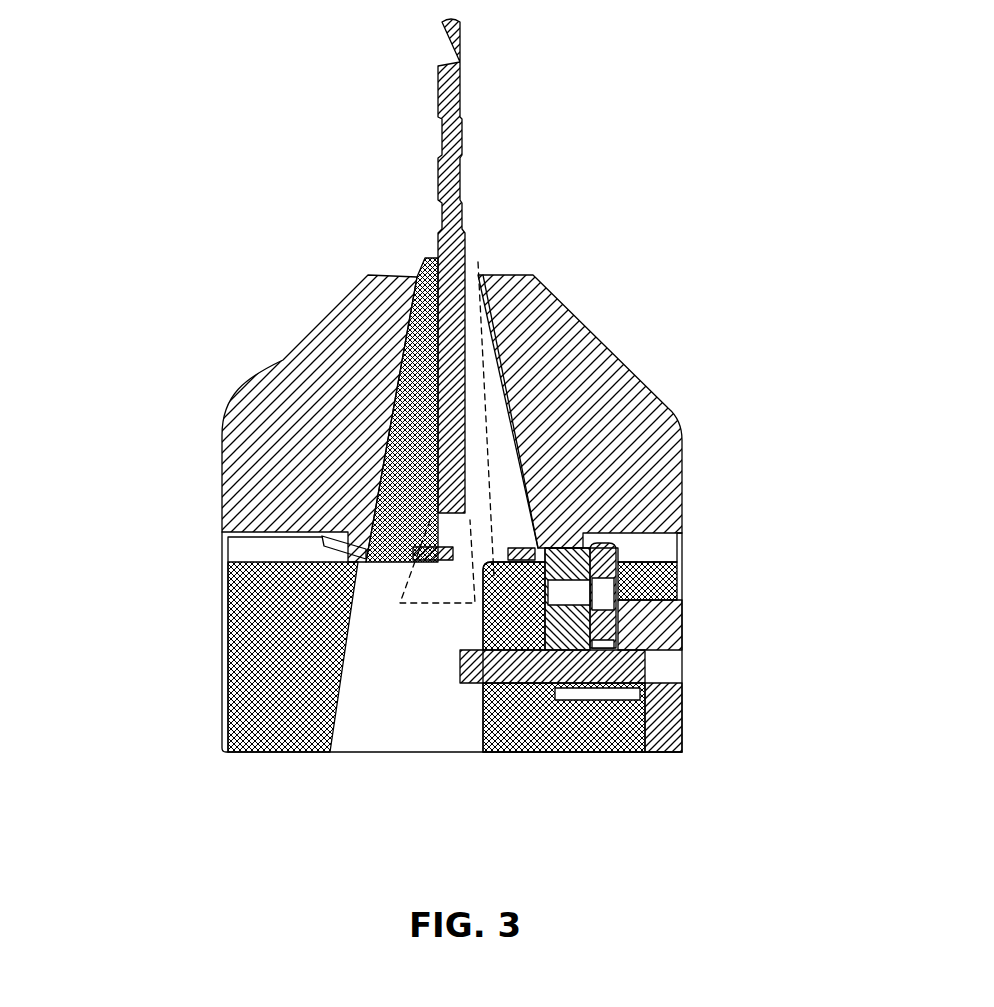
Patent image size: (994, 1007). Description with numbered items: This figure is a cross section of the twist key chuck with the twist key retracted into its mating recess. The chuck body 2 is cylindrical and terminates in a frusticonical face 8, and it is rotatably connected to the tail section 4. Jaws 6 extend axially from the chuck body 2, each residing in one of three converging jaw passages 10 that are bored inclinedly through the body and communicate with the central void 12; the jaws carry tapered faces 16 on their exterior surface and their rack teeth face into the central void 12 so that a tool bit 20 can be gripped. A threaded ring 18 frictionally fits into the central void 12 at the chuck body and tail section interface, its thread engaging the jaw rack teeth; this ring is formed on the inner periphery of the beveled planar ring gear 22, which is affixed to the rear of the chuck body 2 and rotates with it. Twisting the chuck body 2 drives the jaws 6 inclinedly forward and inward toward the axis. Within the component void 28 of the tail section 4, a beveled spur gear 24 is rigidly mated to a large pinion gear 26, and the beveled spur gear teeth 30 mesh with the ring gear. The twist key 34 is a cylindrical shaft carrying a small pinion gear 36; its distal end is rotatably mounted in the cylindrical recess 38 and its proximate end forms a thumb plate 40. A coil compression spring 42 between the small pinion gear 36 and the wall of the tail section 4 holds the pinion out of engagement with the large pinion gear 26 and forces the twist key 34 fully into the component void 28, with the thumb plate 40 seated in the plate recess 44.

The chuck body 2 is at (683, 475).
The tail section 4 is at (245, 755).
The jaws 6 is at (433, 257).
The frusticonical face 8 is at (270, 373).
The jaw passages 10 is at (500, 400).
The central void 12 is at (423, 565).
The tapered faces 16 is at (475, 267).
The threaded ring 18 is at (535, 543).
The tool bit 20 is at (463, 93).
The beveled planar ring gear 22 is at (347, 533).
The beveled spur gear 24 is at (578, 543).
The large pinion gear 26 is at (616, 585).
The component void 28 is at (623, 752).
The beveled spur gear teeth 30 is at (640, 638).
The twist key 34 is at (683, 735).
The small pinion gear 36 is at (520, 760).
The cylindrical recess 38 is at (483, 712).
The thumb plate 40 is at (683, 690).
The coil compression spring 42 is at (660, 752).
The plate recess 44 is at (640, 620).